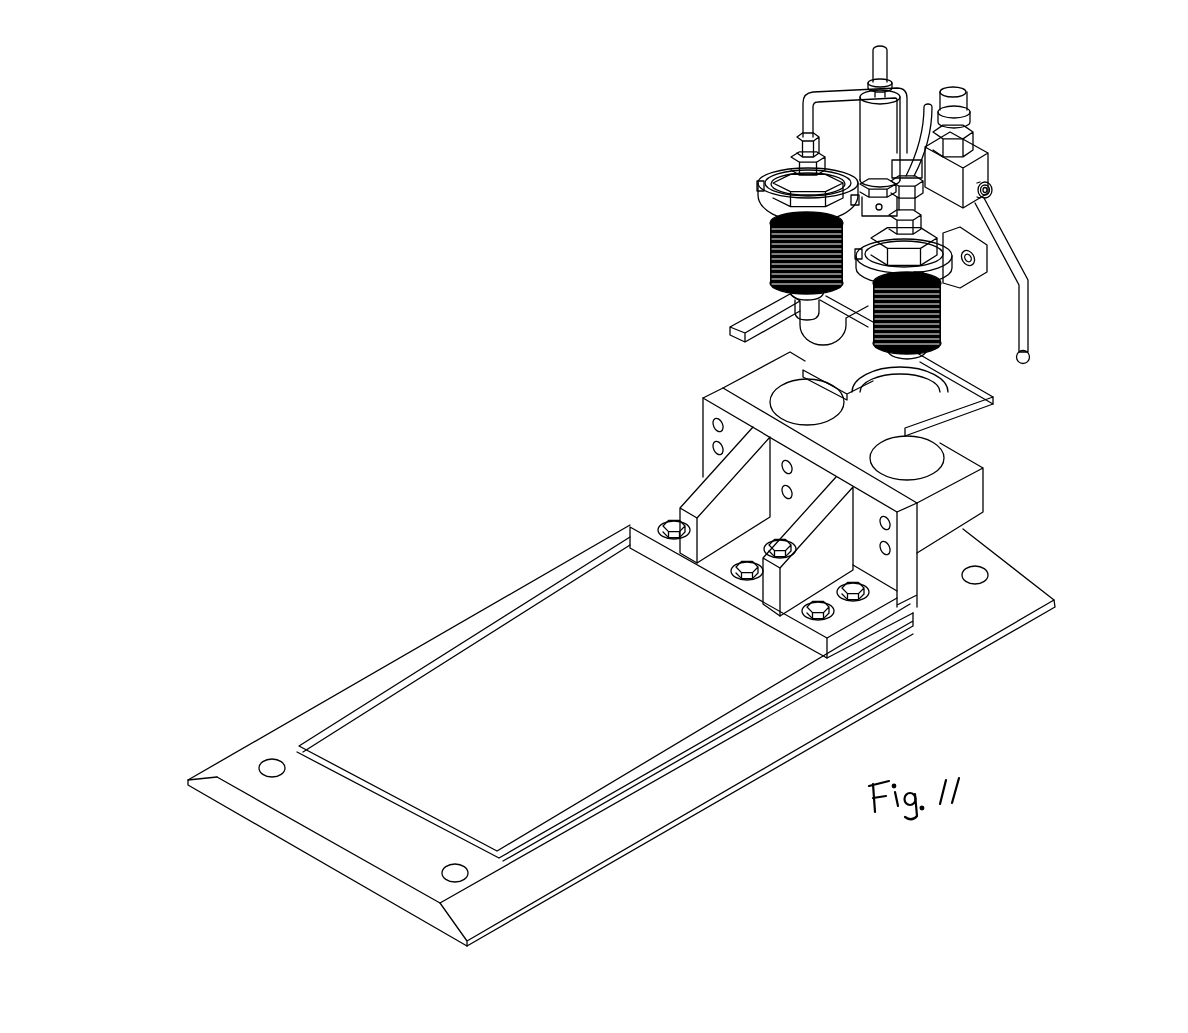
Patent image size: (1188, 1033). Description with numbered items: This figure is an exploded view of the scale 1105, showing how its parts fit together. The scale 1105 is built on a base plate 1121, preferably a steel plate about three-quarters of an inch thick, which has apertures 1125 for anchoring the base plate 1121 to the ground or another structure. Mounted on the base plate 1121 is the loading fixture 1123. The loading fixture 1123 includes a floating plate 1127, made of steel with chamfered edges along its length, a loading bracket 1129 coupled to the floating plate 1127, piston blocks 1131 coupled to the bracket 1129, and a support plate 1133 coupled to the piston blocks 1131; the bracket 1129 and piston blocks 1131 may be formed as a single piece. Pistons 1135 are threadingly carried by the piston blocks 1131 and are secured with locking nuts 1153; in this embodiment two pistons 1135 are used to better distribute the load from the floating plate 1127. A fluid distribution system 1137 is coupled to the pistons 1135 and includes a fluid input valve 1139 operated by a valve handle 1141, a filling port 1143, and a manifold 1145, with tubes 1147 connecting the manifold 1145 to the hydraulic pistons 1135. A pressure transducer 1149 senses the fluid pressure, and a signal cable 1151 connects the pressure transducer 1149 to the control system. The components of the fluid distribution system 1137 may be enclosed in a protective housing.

The scale 1105 is at (482, 415).
The base plate 1121 is at (305, 712).
The loading fixture 1123 is at (700, 285).
The apertures 1125 is at (262, 778).
The floating plate 1127 is at (460, 695).
The loading bracket 1129 is at (707, 463).
The piston blocks 1131 is at (735, 392).
The support plate 1133 is at (995, 420).
The pistons 1135 is at (943, 318).
The fluid distribution system 1137 is at (1008, 173).
The fluid input valve 1139 is at (985, 150).
The valve handle 1141 is at (1032, 318).
The filling port 1143 is at (970, 112).
The manifold 1145 is at (978, 278).
The tubes 1147 is at (830, 90).
The pressure transducers 1149 is at (858, 153).
The signal cables 1151 is at (887, 62).
The locking nuts 1153 is at (748, 172).